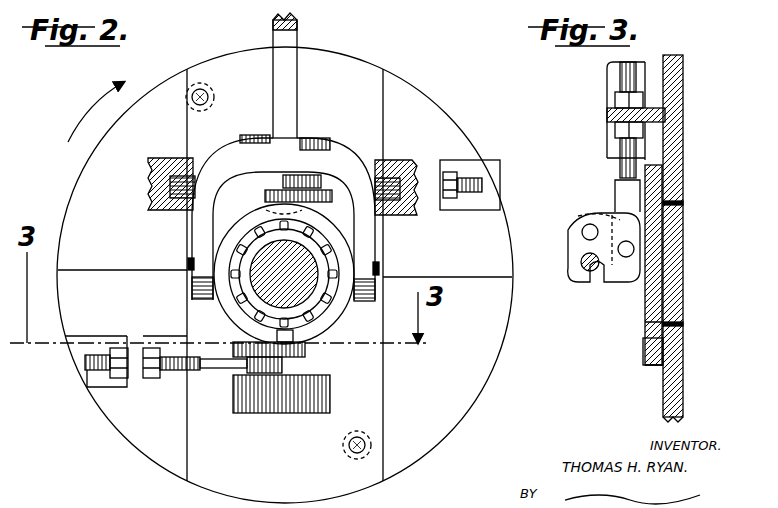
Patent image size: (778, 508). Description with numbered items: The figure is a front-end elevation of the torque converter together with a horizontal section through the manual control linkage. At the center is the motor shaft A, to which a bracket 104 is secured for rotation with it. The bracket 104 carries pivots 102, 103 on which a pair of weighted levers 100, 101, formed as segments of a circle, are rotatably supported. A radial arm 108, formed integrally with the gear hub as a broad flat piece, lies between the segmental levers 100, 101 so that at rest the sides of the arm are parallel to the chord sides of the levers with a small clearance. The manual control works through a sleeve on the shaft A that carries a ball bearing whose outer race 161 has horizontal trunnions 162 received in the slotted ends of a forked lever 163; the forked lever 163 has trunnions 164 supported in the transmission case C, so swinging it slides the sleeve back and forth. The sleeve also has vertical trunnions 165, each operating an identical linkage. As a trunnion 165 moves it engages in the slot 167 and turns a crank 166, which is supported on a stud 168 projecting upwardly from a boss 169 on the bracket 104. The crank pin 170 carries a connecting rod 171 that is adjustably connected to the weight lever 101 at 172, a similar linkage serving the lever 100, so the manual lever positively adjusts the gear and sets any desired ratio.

In FIG. 2, the weighted lever 100 is at (498, 338).
In FIG. 3, the weighted lever 100 is at (683, 380).
In FIG. 2, the weighted lever 101 is at (91, 174).
In FIG. 3, the weighted lever 101 is at (672, 150).
In FIG. 2, the pivot 102 is at (350, 449).
In FIG. 3, the pivot 102 is at (641, 346).
In FIG. 2, the pivot 103 is at (206, 92).
In FIG. 2, the bracket 104 is at (282, 459).
In FIG. 3, the bracket 104 is at (654, 306).
In FIG. 3, the radial arm 108 is at (672, 248).
In FIG. 2, the outer race 161 is at (330, 316).
In FIG. 2, the horizontal trunnion 162 is at (412, 268).
In FIG. 2, the forked lever 163 is at (298, 97).
In FIG. 2, the trunnion 164 is at (393, 175).
In FIG. 2, the vertical trunnion 165 is at (275, 330).
In FIG. 3, the vertical trunnion 165 is at (590, 280).
In FIG. 2, the crank 166 is at (317, 362).
In FIG. 3, the crank 166 is at (578, 258).
In FIG. 3, the slot 167 is at (580, 274).
In FIG. 2, the stud 168 is at (245, 410).
In FIG. 3, the stud 168 is at (582, 228).
In FIG. 2, the boss 169 is at (274, 430).
In FIG. 3, the boss 169 is at (624, 262).
In FIG. 3, the crank pin 170 is at (600, 285).
In FIG. 2, the connecting rod 171 is at (304, 168).
In FIG. 3, the connecting rod 171 is at (618, 190).
In FIG. 2, the adjustable connection 172 is at (146, 384).
In FIG. 3, the adjustable connection 172 is at (607, 128).
In FIG. 2, the motor shaft A is at (258, 288).
In FIG. 2, the transmission case C is at (422, 238).